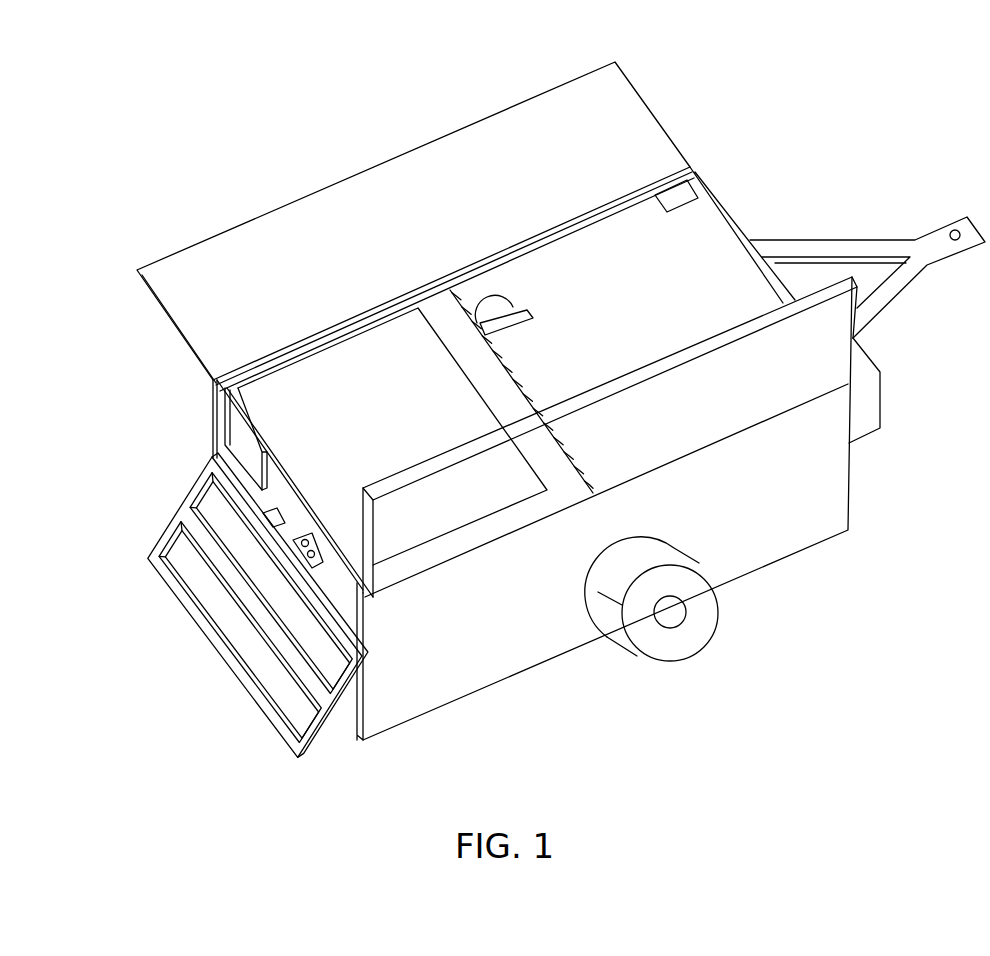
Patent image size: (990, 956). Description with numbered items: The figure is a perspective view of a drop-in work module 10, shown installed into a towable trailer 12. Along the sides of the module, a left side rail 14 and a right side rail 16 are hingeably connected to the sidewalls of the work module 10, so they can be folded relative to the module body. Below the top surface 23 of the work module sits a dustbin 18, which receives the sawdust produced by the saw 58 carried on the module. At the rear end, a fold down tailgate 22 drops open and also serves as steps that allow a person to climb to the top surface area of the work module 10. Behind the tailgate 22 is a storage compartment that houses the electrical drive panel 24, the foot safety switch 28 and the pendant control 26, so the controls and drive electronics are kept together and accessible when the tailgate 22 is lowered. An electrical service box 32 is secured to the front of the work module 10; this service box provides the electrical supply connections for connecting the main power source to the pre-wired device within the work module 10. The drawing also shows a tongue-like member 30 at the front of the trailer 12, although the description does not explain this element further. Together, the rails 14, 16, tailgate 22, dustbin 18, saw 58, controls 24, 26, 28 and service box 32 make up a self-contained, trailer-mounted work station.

The drop-in work module 10 is at (195, 151).
The towable trailer 12 is at (523, 624).
The left side rail 14 is at (546, 173).
The right side rail 16 is at (726, 414).
The dustbin 18 is at (368, 350).
The fold down tailgate 22 is at (300, 745).
The top surface 23 is at (228, 386).
The electrical drive panel 24 is at (248, 454).
The pendant control 26 is at (306, 540).
The foot safety switch 28 is at (275, 515).
The tongue 30 is at (935, 228).
The electrical service box 32 is at (872, 408).
The saw 58 is at (505, 297).